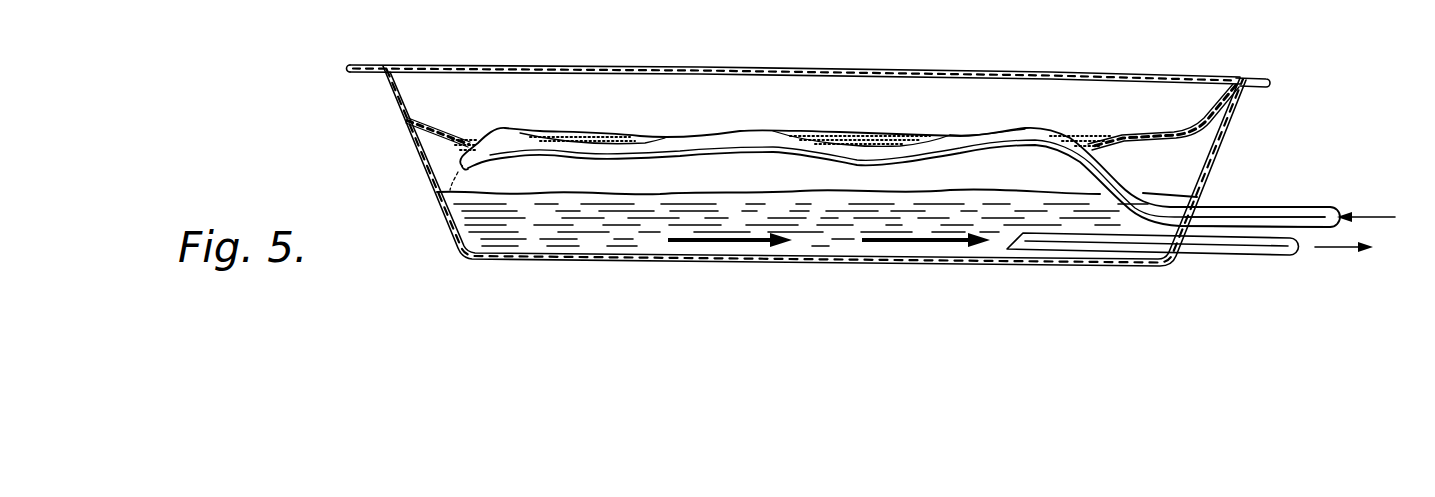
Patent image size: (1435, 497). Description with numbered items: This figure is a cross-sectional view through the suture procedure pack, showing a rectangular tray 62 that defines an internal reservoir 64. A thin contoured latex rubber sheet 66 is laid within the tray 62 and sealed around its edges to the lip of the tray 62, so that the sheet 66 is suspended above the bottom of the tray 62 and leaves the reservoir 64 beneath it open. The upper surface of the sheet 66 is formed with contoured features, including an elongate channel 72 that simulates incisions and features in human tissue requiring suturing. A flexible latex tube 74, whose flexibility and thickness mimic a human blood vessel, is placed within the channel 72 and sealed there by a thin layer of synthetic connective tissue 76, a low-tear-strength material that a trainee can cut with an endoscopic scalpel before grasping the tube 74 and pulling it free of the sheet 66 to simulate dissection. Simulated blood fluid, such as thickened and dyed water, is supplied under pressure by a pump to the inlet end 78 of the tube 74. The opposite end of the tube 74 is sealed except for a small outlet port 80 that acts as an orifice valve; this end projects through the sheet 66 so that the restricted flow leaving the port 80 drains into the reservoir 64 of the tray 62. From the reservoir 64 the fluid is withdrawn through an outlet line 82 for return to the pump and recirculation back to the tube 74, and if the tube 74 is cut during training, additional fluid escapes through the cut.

The tray 62 is at (1270, 83).
The internal reservoir 64 is at (713, 168).
The latex rubber sheet 66 is at (413, 125).
The channel 72 is at (645, 145).
The flexible latex tube 74 is at (980, 137).
The synthetic connective tissue 76 is at (833, 135).
The inlet end 78 is at (1247, 207).
The outlet port 80 is at (460, 152).
The outlet line 82 is at (1267, 243).